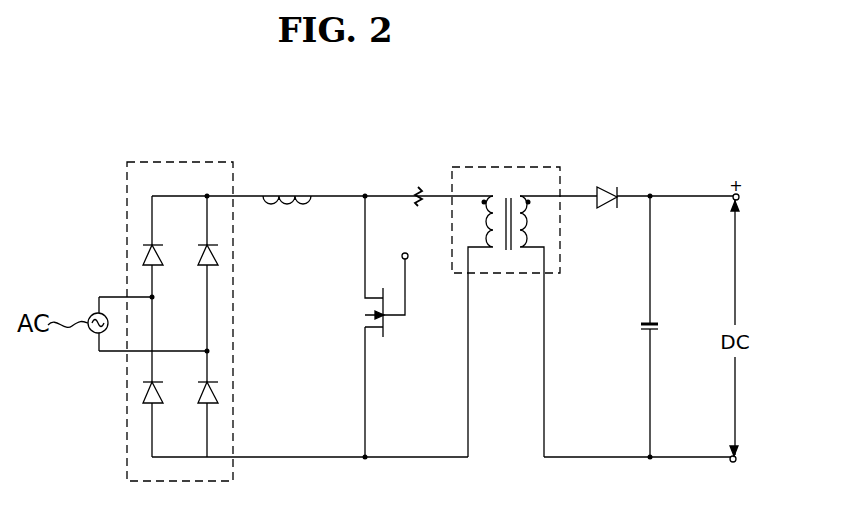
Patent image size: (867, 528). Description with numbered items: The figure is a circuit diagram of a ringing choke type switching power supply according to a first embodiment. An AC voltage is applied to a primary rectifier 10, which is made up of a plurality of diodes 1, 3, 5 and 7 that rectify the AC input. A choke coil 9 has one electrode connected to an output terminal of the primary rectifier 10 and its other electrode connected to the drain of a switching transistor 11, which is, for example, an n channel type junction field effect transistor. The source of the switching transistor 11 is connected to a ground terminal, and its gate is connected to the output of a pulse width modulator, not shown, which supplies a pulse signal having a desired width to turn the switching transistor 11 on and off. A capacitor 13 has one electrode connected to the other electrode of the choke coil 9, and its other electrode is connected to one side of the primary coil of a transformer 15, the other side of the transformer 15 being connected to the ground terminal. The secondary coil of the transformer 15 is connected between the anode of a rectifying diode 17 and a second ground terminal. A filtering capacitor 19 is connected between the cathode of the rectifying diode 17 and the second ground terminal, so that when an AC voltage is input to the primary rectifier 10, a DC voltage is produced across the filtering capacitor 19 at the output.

The diode 1 is at (143, 255).
The diode 3 is at (216, 250).
The diode 5 is at (143, 393).
The diode 7 is at (216, 388).
The choke coil 9 is at (288, 192).
The primary rectifier 10 is at (162, 294).
The switching transistor 11 is at (365, 315).
The capacitor 13 is at (418, 187).
The transformer 15 is at (513, 167).
The rectifying diode 17 is at (612, 188).
The filtering capacitor 19 is at (645, 330).